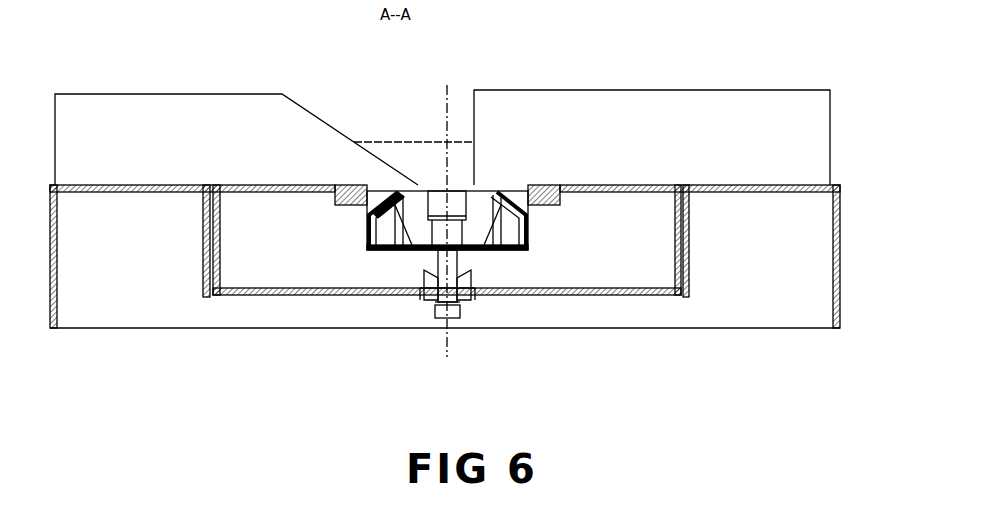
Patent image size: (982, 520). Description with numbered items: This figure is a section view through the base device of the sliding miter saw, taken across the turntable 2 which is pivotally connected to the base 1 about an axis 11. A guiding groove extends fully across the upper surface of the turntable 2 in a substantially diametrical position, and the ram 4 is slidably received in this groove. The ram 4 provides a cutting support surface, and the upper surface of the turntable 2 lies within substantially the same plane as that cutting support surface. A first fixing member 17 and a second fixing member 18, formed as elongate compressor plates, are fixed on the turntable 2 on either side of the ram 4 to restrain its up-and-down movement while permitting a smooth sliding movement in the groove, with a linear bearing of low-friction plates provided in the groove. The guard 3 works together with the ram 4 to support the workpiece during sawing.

The base 1 is at (687, 290).
The turntable 2 is at (530, 250).
The guard 3 is at (735, 153).
The ram 4 is at (446, 328).
The axis 11 is at (463, 300).
The first fixing member 17 is at (382, 188).
The second fixing member 18 is at (525, 186).